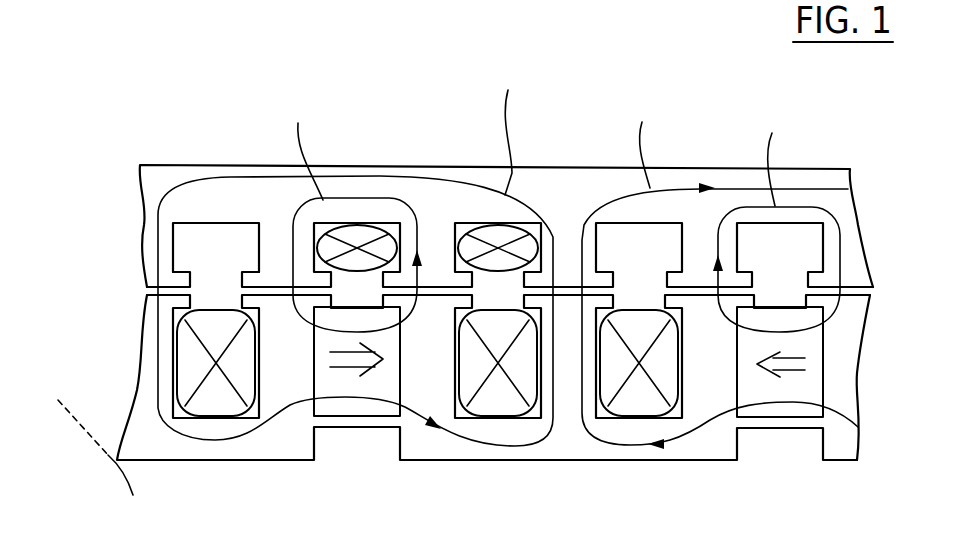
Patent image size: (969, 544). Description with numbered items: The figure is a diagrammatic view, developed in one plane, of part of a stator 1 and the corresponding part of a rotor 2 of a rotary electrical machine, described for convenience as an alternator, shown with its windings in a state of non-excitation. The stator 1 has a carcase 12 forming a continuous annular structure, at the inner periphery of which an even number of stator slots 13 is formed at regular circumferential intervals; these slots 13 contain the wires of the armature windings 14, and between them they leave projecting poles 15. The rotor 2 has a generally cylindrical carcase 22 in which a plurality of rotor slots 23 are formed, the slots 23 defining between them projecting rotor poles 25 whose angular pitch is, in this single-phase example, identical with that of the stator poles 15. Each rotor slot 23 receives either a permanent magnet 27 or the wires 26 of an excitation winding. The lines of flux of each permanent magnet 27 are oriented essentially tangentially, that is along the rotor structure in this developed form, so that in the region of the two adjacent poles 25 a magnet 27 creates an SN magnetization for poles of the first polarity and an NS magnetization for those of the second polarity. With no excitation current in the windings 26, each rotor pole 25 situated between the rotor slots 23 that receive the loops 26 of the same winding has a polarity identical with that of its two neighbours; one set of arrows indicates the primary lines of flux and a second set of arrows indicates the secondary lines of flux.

The stator 1 is at (118, 198).
The rotor 2 is at (115, 385).
The carcase 12 is at (542, 192).
The stator slots 13 is at (178, 236).
The armature windings 14 is at (362, 235).
The projecting poles 15 is at (278, 284).
The carcase 22 is at (428, 447).
The rotor slots 23 is at (233, 413).
The rotor poles 25 is at (863, 310).
The wires of excitation winding 26 is at (197, 402).
The permanent magnet 27 is at (783, 412).